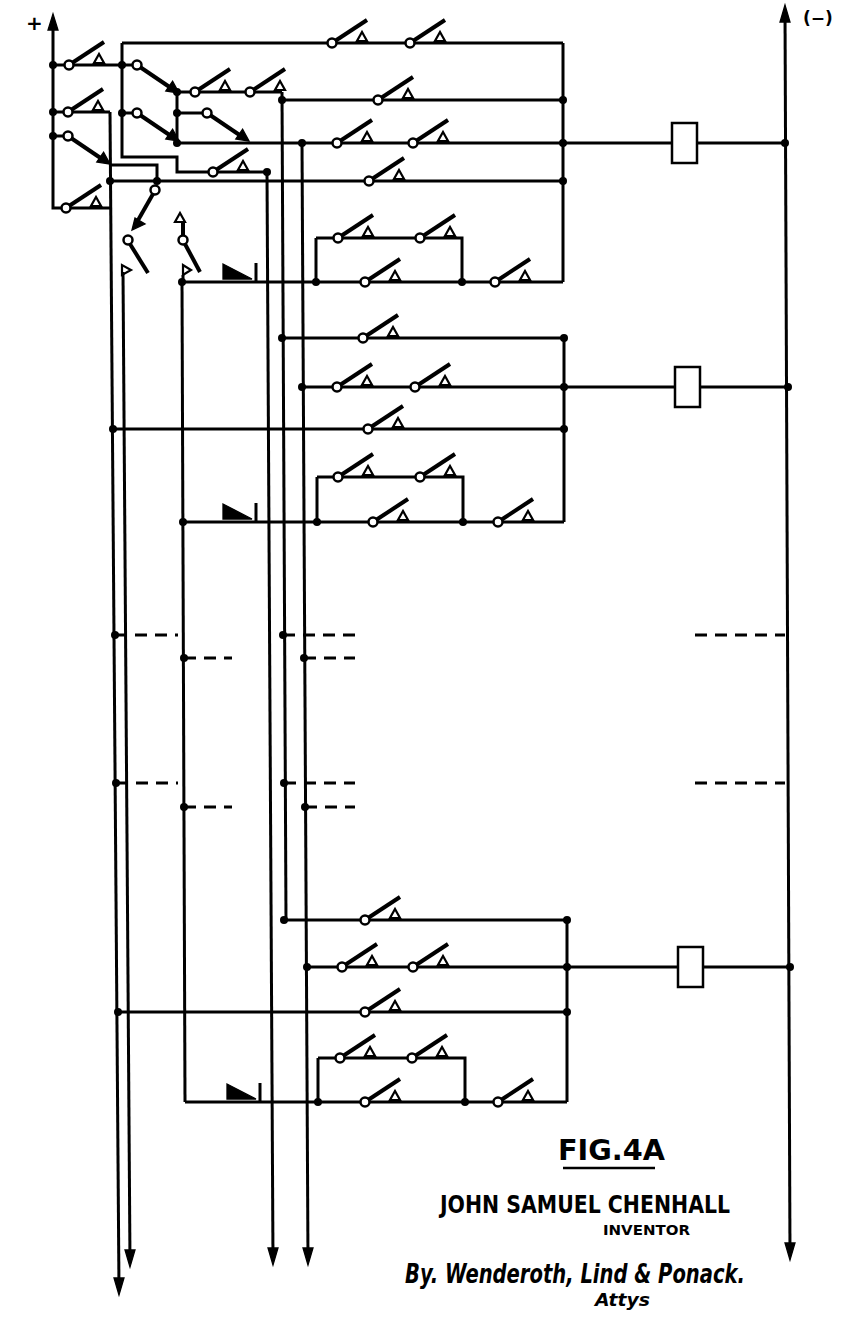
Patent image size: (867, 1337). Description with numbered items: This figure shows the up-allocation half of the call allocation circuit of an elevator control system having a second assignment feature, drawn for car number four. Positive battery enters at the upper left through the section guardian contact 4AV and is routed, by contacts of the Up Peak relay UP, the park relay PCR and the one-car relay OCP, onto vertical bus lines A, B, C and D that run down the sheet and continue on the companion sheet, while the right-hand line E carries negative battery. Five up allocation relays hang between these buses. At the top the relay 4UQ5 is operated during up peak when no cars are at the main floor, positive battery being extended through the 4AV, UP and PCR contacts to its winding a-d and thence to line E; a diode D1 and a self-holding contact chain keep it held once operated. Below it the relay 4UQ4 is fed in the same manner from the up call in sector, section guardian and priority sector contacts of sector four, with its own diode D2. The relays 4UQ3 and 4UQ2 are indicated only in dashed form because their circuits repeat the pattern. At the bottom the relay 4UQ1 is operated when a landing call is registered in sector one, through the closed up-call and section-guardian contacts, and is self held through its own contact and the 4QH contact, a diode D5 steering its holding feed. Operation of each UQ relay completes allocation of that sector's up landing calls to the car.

The diode D1 is at (239, 286).
The up allocation relay 4UQ5 is at (683, 129).
The diode D2 is at (239, 527).
The up allocation relay 4UQ4 is at (686, 370).
The up allocation relay 4UQ3 is at (709, 633).
The up allocation relay 4UQ2 is at (709, 783).
The diode D5 is at (243, 1106).
The up allocation relay 4UQ1 is at (689, 949).
The connection line A is at (119, 716).
The connection line B is at (133, 783).
The connection line C is at (272, 732).
The connection line D is at (310, 718).
The connection line E is at (789, 645).